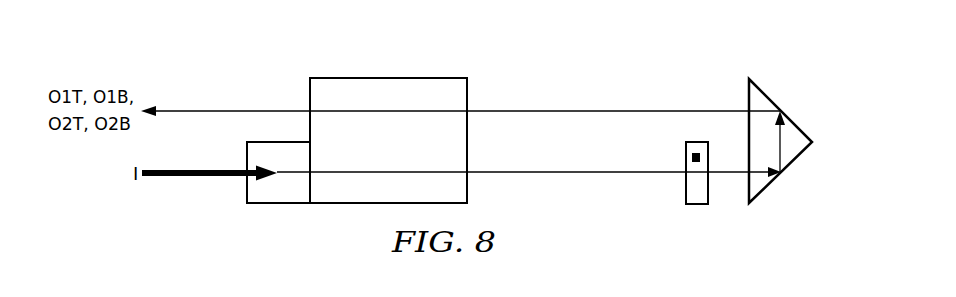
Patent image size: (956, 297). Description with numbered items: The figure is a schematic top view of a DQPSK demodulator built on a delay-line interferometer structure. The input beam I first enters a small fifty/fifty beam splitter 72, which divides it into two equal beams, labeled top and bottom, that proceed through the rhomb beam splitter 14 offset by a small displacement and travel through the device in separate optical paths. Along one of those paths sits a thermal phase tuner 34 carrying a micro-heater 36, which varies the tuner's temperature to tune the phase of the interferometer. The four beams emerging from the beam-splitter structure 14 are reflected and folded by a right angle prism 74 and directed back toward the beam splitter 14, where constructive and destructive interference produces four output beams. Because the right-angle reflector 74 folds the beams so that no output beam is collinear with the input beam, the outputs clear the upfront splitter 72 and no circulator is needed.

The rhomb beam splitter 14 is at (383, 67).
The 50/50 beam splitter 72 is at (247, 188).
The thermal phase tuner 34 is at (697, 206).
The micro-heater 36 is at (690, 157).
The right angle prism 74 is at (790, 120).